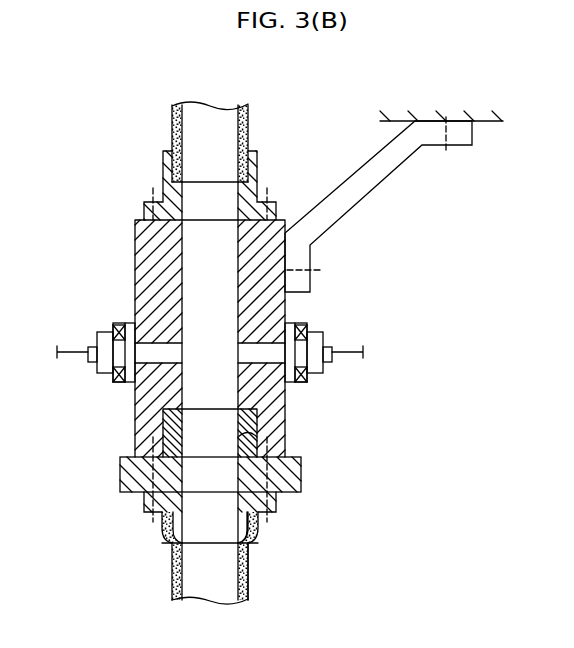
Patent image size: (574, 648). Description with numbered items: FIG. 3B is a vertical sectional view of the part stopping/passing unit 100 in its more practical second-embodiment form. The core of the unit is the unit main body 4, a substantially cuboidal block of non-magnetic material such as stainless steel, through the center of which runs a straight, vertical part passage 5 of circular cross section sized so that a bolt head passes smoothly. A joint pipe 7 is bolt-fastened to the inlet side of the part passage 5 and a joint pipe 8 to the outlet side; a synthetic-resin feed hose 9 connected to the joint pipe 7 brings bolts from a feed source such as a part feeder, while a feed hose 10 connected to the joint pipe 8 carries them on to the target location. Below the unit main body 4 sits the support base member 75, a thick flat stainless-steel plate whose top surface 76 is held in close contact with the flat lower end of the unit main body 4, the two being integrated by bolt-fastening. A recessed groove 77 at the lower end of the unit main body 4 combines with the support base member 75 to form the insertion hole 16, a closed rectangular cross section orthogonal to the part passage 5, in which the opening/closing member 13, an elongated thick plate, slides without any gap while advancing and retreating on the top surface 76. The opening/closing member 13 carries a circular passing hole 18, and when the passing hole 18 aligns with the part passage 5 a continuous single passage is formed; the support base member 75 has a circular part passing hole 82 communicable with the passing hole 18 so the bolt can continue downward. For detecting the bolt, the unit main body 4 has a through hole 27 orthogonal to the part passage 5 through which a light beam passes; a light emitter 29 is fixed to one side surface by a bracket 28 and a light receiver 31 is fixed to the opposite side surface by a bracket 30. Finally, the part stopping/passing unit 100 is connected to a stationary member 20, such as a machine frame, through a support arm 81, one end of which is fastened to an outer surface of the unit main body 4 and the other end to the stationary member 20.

The part stopping/passing unit 100 is at (68, 183).
The unit main body 4 is at (135, 230).
The part passage 5 is at (202, 274).
The joint pipe 7 is at (257, 170).
The joint pipe 8 is at (247, 528).
The feed hose 9 is at (248, 122).
The feed hose 10 is at (248, 575).
The opening/closing member 13 is at (167, 433).
The insertion hole 16 is at (170, 405).
The passing hole 18 is at (217, 418).
The stationary member 20 is at (490, 124).
The through hole 27 is at (160, 352).
The bracket 28 is at (117, 323).
The light emitter 29 is at (92, 368).
The bracket 30 is at (303, 382).
The light receiver 31 is at (333, 336).
The support base member 75 is at (300, 480).
The top surface 76 is at (257, 437).
The recessed groove 77 is at (257, 412).
The support arm 81 is at (377, 190).
The part passing hole 82 is at (200, 485).